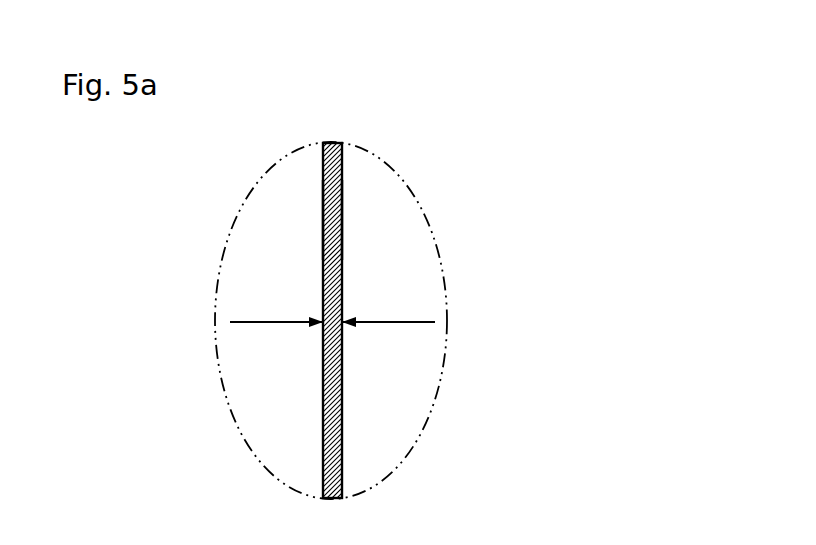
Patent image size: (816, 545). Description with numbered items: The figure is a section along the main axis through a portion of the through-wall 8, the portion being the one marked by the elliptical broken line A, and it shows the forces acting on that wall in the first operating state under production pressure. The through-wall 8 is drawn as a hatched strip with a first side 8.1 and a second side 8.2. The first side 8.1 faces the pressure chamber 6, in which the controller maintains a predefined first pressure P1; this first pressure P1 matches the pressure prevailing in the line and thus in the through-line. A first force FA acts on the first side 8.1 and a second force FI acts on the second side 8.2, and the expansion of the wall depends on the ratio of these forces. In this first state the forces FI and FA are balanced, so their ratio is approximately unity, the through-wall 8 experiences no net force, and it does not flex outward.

The elliptical broken line A is at (331, 318).
The through-wall 8 is at (336, 152).
The first side 8.1 is at (344, 201).
The second side 8.2 is at (320, 215).
The second force FI is at (276, 342).
The first force FA is at (389, 342).
The pressure chamber 6 is at (380, 428).
The first pressure P1 is at (413, 406).